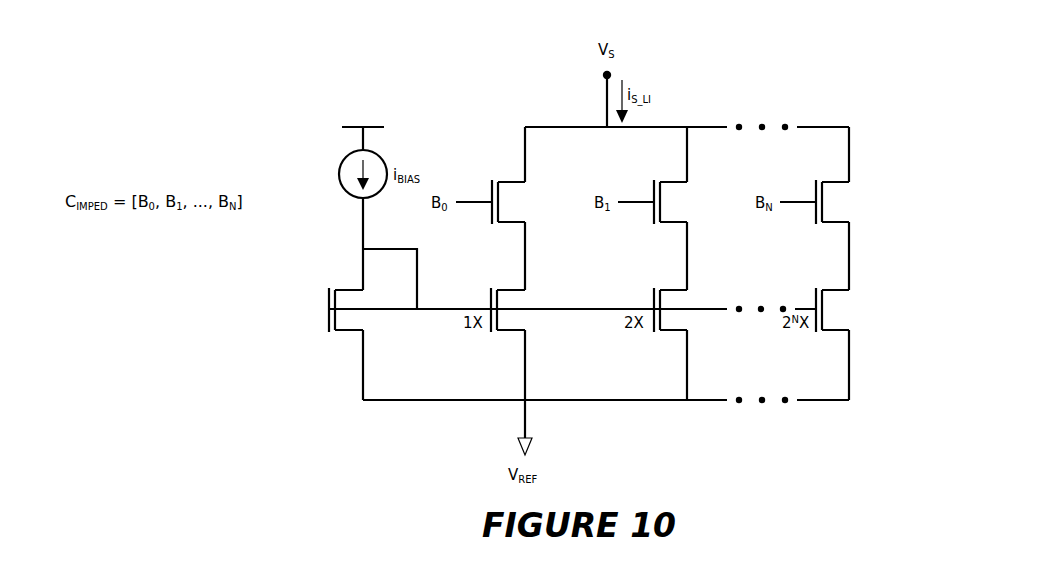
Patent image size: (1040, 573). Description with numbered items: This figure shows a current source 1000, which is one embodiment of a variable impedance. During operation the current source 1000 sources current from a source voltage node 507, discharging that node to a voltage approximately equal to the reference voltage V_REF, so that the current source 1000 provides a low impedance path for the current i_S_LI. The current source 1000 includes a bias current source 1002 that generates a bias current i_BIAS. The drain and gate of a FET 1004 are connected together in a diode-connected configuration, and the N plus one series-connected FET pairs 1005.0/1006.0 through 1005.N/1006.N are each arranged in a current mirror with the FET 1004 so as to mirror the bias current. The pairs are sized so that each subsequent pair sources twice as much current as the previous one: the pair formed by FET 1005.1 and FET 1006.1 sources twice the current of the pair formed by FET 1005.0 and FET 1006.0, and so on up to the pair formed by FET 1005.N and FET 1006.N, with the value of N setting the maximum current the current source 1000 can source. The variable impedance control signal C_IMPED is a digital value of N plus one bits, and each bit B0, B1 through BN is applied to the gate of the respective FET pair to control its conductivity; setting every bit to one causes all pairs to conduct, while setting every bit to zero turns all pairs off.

The current source 1000 is at (944, 131).
The source voltage node 507 is at (604, 74).
The bias current source 1002 is at (340, 163).
The FET 1004 is at (327, 300).
The FET 1005.0 is at (556, 205).
The FET 1005.1 is at (718, 205).
The FET 1005.N is at (880, 205).
The FET 1006.0 is at (510, 288).
The FET 1006.1 is at (672, 288).
The FET 1006.N is at (835, 288).